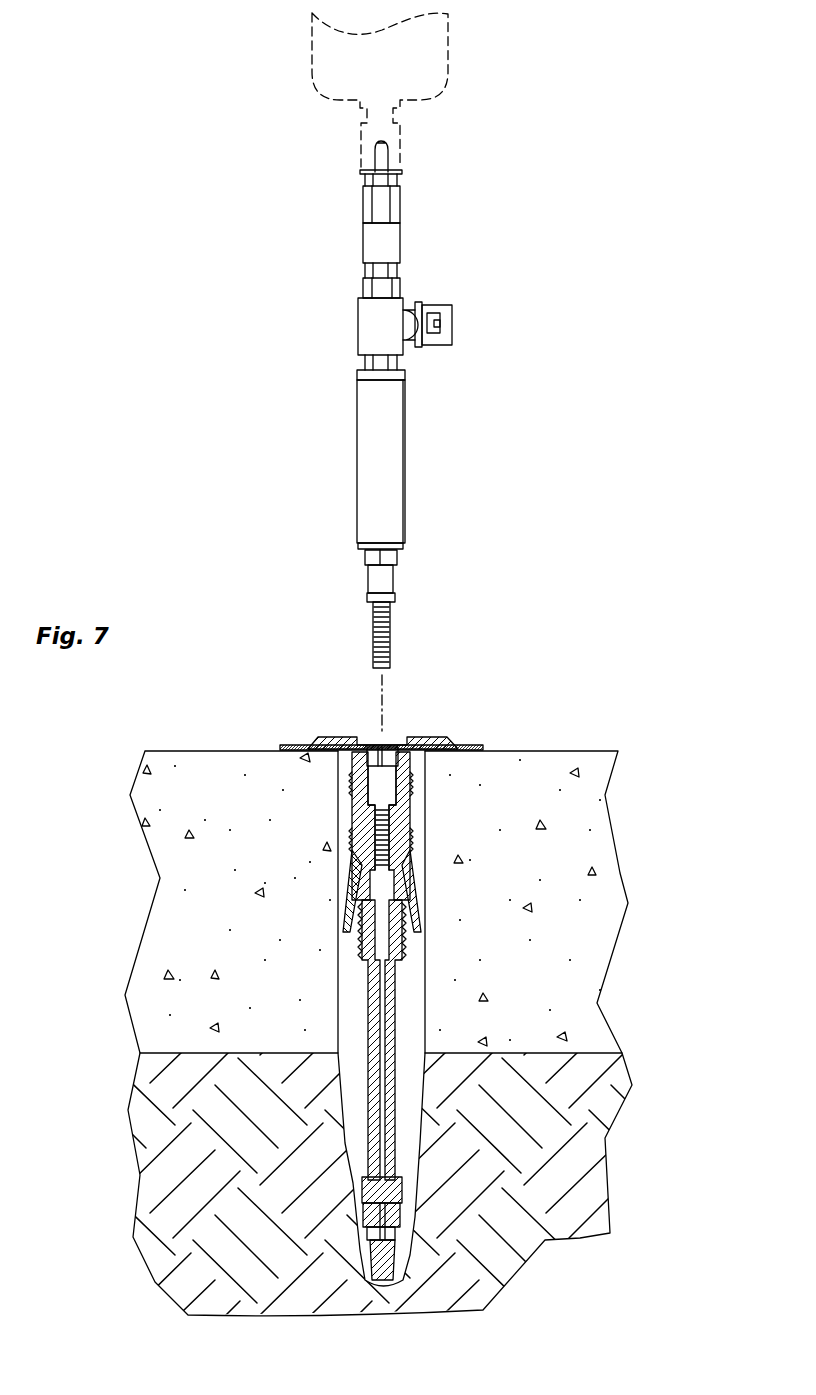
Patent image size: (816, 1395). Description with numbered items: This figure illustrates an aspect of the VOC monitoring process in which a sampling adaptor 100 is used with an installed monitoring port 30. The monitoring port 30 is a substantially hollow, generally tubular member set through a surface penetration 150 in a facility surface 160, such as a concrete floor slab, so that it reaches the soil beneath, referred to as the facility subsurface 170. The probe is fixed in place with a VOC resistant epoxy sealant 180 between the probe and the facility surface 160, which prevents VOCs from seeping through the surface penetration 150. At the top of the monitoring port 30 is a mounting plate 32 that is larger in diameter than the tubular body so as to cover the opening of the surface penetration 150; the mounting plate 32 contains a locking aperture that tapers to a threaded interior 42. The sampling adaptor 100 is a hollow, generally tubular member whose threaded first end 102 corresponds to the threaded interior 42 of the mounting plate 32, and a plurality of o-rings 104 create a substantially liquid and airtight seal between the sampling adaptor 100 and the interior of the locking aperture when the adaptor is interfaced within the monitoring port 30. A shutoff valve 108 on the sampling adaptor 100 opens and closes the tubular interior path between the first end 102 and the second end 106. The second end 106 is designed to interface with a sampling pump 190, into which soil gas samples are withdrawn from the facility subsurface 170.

The sampling pump 190 is at (448, 38).
The second end 106 is at (389, 158).
The shutoff valve 108 is at (450, 310).
The sampling adaptor 100 is at (405, 461).
The o-rings 104 is at (400, 550).
The threaded first end 102 is at (392, 632).
The mounting plate 32 is at (443, 738).
The epoxy sealant 180 is at (483, 746).
The monitoring port 30 is at (400, 815).
The facility surface 160 is at (610, 852).
The threaded interior 42 is at (405, 852).
The surface penetration 150 is at (350, 815).
The facility subsurface 170 is at (608, 1102).